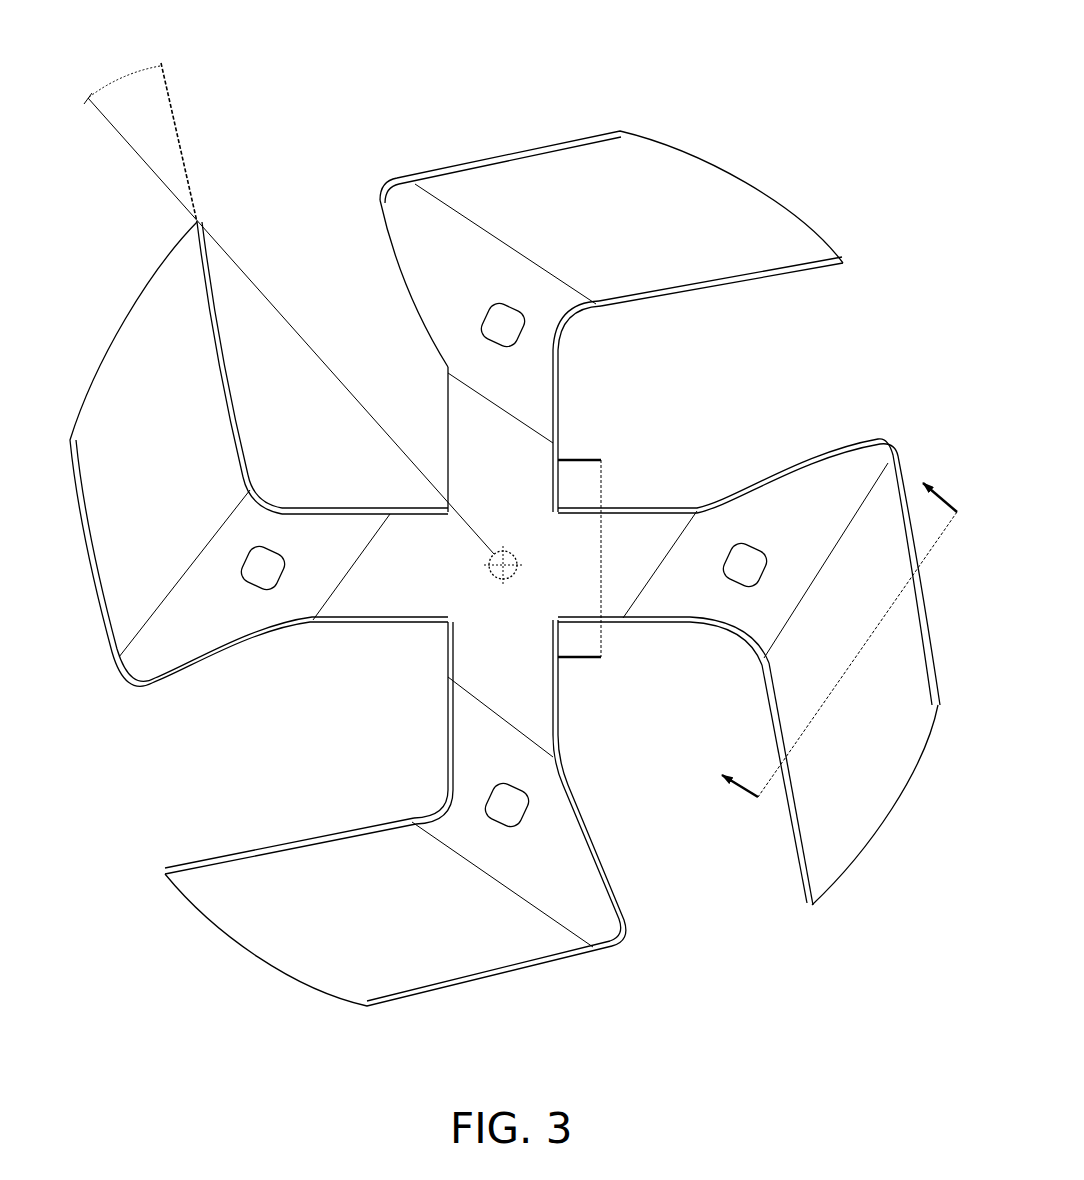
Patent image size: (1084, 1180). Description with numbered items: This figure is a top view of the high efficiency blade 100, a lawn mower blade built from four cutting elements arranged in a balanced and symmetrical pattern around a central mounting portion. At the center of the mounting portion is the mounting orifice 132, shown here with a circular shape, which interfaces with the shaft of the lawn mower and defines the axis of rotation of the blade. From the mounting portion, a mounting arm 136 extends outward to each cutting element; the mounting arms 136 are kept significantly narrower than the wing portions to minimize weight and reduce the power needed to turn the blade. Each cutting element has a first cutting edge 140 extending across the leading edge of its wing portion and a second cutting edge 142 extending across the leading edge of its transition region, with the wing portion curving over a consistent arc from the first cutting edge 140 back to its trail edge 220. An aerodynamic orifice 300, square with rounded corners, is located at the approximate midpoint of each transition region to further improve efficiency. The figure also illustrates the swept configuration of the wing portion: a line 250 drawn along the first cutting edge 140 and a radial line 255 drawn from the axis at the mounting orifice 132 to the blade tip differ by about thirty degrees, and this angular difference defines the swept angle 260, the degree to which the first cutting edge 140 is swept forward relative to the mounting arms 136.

The high efficiency blade 100 is at (796, 136).
The mounting orifice 132 is at (513, 553).
The mounting arm 136 is at (480, 442).
The first cutting edge 140 is at (690, 285).
The second cutting edge 142 is at (567, 340).
The trail edge 220 is at (502, 156).
The line 250 is at (182, 153).
The radial line 255 is at (155, 180).
The swept angle 260 is at (127, 62).
The aerodynamic orifice 300 is at (270, 583).